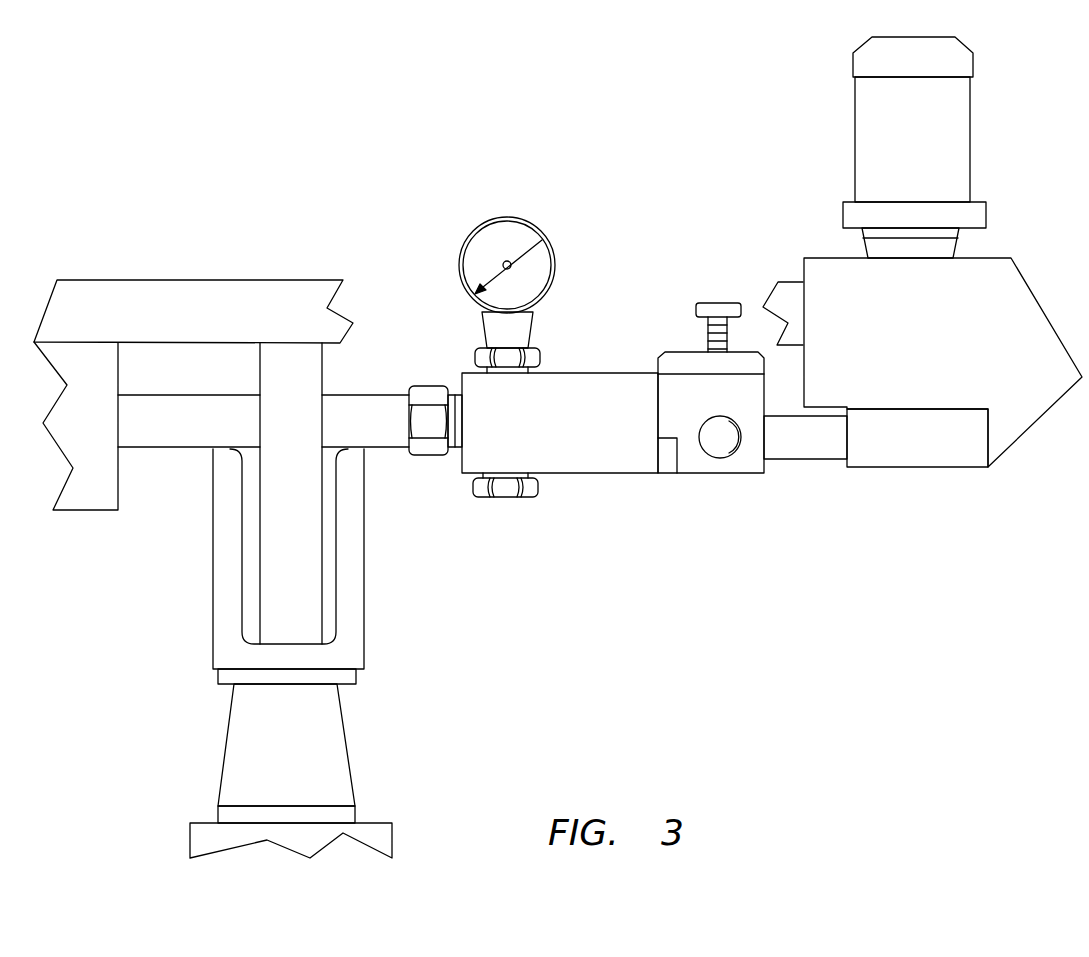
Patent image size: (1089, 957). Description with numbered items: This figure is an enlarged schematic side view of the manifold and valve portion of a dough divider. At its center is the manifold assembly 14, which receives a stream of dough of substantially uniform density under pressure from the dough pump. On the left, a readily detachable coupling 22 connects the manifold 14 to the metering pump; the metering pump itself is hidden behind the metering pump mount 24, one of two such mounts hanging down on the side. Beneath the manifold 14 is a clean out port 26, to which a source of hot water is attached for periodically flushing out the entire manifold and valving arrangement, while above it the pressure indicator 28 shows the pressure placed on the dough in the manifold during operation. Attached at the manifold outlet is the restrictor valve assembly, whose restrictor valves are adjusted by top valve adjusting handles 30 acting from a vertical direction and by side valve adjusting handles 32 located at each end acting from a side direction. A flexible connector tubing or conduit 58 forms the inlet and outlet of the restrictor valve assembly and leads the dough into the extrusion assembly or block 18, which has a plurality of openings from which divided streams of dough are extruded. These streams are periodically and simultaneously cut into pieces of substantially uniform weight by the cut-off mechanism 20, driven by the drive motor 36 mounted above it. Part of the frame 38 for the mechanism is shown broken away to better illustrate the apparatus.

The manifold assembly 14 is at (566, 428).
The extrusion assembly or block 18 is at (913, 468).
The cut-off mechanism 20 is at (933, 346).
The readily detachable coupling 22 is at (413, 456).
The metering pump mount 24 is at (304, 411).
The clean out port 26 is at (498, 497).
The pressure indicator 28 is at (468, 237).
The top valve adjusting handle 30 is at (710, 300).
The side valve adjusting handle 32 is at (718, 458).
The drive motor 36 is at (926, 143).
The frame 38 is at (172, 280).
The flexible connector tubing or conduit 58 is at (793, 460).